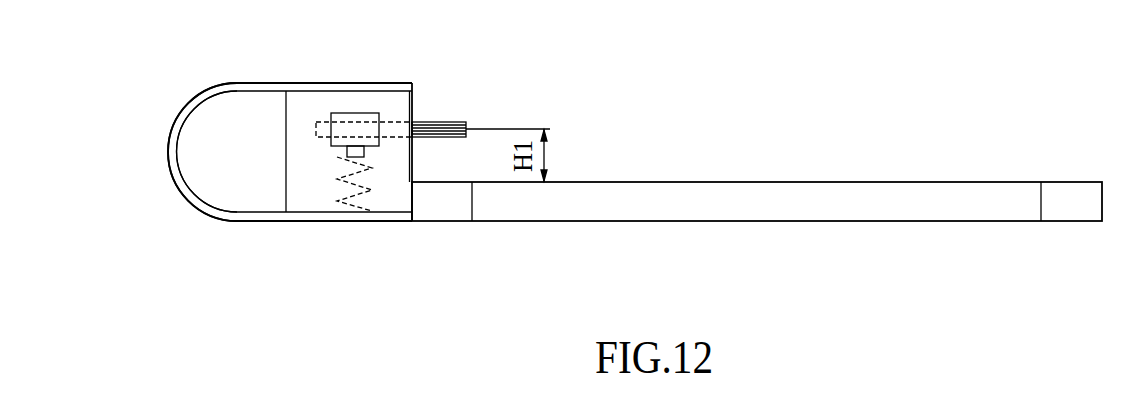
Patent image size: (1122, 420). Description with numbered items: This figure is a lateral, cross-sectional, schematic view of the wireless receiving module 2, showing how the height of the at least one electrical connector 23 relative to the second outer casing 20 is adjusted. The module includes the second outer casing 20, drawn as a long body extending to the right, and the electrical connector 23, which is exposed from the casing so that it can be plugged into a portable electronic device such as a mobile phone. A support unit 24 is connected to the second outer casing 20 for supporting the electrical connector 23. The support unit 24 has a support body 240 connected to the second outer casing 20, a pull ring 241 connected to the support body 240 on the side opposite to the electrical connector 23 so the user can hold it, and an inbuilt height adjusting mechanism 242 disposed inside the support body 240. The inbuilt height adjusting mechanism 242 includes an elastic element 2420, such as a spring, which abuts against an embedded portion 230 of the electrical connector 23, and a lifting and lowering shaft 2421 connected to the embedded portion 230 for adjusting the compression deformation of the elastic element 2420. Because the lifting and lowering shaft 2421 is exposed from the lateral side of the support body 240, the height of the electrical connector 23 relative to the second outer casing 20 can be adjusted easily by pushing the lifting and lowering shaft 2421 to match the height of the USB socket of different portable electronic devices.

The wireless receiving module 2 is at (276, 166).
The second outer casing 20 is at (715, 197).
The electrical connector 23 is at (447, 139).
The support unit 24 is at (348, 85).
The embedded portion 230 is at (397, 132).
The support body 240 is at (300, 102).
The pull ring 241 is at (172, 128).
The inbuilt height adjusting mechanism 242 is at (359, 219).
The elastic element 2420 is at (333, 220).
The lifting and lowering shaft 2421 is at (369, 128).